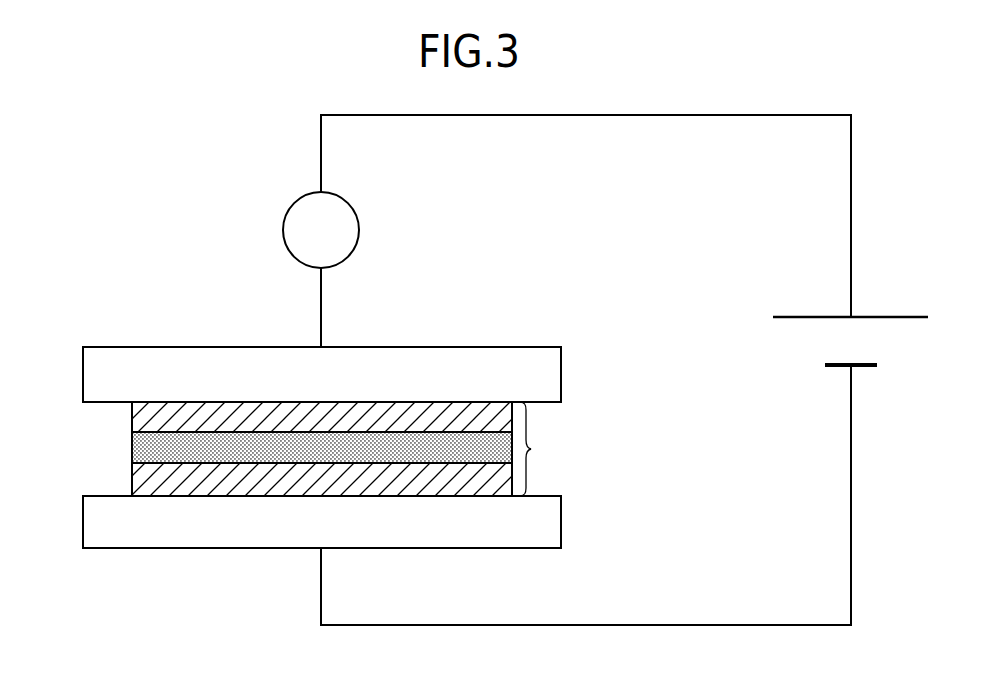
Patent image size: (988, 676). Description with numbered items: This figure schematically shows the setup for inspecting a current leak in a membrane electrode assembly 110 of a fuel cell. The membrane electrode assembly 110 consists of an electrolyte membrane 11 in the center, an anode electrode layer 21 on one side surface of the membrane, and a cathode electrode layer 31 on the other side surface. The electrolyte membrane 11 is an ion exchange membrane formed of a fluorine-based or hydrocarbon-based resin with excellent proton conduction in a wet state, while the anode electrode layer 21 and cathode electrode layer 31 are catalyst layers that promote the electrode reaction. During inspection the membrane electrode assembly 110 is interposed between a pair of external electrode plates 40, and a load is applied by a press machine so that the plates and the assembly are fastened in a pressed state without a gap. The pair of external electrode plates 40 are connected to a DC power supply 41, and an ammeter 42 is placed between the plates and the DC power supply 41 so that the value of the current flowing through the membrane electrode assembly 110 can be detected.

The ammeter 42 is at (359, 230).
The DC power supply 41 is at (900, 317).
The external electrode plates 40 is at (561, 372).
The anode electrode layer 21 is at (132, 410).
The electrolyte membrane 11 is at (132, 443).
The cathode electrode layer 31 is at (132, 480).
The membrane electrode assembly 110 is at (556, 449).